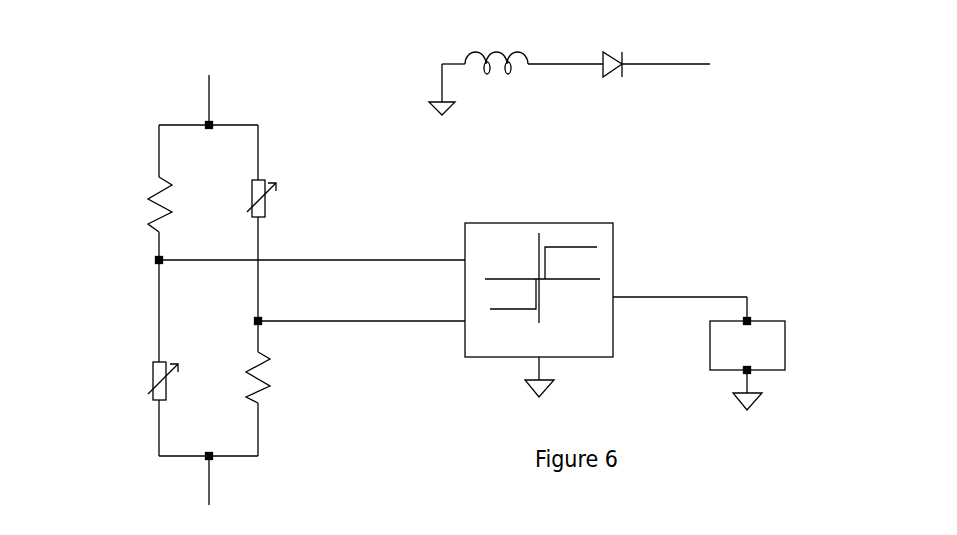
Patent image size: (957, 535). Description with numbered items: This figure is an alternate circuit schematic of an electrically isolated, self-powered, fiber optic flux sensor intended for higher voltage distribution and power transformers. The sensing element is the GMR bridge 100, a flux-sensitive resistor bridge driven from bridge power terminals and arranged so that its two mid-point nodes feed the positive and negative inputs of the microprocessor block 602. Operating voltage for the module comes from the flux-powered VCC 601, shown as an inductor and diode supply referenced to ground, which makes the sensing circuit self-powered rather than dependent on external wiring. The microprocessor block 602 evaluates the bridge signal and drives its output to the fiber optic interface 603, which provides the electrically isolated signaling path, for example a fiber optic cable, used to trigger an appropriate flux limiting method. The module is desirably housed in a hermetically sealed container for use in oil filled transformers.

The GMR bridge 100 is at (102, 133).
The flux-powered VCC 601 is at (745, 32).
The microprocessor block 602 is at (622, 205).
The fiber optic interface 603 is at (900, 322).